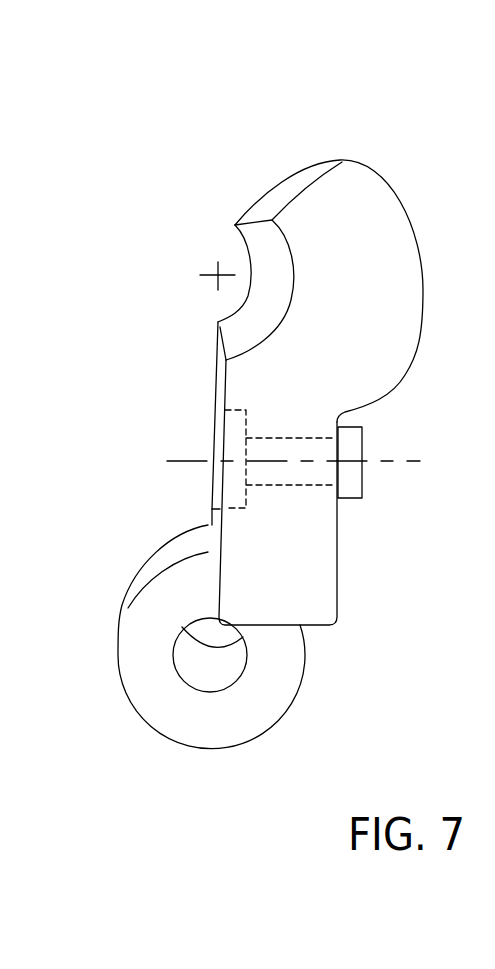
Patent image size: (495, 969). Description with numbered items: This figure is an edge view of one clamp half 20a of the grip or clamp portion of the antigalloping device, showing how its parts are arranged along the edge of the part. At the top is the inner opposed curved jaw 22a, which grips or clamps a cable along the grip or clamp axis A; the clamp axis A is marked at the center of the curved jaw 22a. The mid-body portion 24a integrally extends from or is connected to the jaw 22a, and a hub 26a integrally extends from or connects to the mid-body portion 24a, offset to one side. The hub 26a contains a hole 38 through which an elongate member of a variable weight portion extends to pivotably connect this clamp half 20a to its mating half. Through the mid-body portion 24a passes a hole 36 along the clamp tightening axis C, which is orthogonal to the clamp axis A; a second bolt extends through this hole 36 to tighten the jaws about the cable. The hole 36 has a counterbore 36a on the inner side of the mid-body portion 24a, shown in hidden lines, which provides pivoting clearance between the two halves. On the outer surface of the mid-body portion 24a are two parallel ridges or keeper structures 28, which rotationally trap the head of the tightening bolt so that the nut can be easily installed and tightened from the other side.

The clamp half 20a is at (348, 104).
The inner opposed curved jaw 22a is at (247, 237).
The mid-body portion 24a is at (337, 588).
The hub 26a is at (218, 750).
The ridges or keeper structures 28 is at (362, 490).
The hole 36 is at (213, 462).
The counterbore 36a is at (223, 423).
The hole 38 is at (190, 668).
The grip or clamp axis A is at (213, 278).
The clamp tightening axis C is at (415, 467).